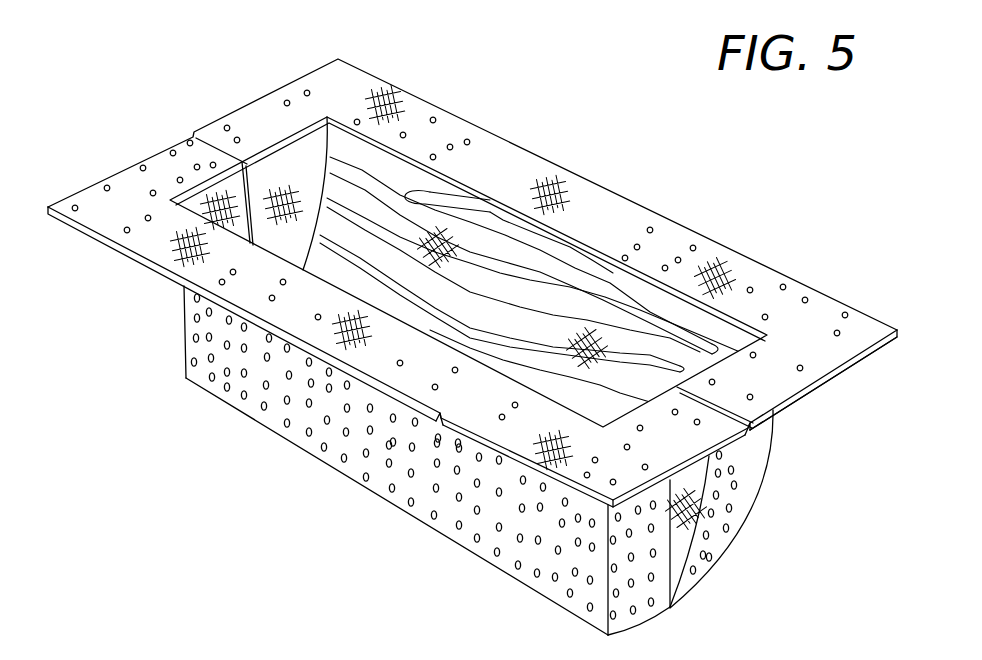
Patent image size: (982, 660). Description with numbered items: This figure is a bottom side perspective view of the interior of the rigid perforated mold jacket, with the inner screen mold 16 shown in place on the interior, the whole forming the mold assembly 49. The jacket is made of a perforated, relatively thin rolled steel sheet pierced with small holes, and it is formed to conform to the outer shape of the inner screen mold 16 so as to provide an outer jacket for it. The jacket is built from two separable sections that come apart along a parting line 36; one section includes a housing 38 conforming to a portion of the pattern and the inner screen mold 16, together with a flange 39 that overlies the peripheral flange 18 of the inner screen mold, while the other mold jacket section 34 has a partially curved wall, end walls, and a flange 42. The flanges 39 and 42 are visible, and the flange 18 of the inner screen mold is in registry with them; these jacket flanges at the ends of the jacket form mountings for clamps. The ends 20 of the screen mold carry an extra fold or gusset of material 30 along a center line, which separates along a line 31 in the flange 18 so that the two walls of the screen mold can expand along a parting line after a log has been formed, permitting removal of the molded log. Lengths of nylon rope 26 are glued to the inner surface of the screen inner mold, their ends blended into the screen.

The inner screen mold 16 is at (468, 198).
The flange 18 is at (650, 190).
The ends of the mold 20 is at (300, 160).
The lengths of nylon rope 26 is at (673, 365).
The fold or gusset of material 30 is at (678, 550).
The parting line 31 is at (247, 175).
The mold jacket section 34 is at (732, 518).
The parting line 36 is at (777, 412).
The housing 38 is at (183, 365).
The flange 39 is at (440, 414).
The flange 42 is at (420, 113).
The mold assembly 49 is at (266, 415).